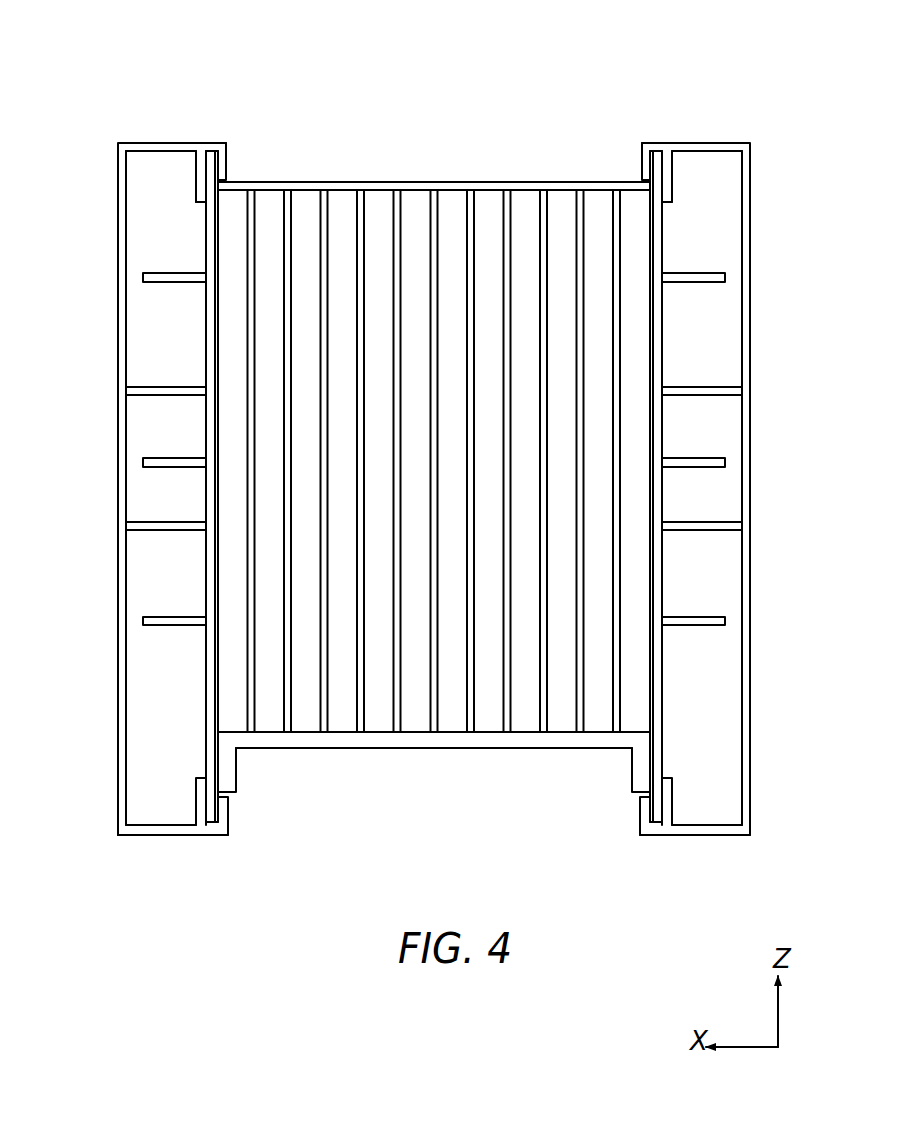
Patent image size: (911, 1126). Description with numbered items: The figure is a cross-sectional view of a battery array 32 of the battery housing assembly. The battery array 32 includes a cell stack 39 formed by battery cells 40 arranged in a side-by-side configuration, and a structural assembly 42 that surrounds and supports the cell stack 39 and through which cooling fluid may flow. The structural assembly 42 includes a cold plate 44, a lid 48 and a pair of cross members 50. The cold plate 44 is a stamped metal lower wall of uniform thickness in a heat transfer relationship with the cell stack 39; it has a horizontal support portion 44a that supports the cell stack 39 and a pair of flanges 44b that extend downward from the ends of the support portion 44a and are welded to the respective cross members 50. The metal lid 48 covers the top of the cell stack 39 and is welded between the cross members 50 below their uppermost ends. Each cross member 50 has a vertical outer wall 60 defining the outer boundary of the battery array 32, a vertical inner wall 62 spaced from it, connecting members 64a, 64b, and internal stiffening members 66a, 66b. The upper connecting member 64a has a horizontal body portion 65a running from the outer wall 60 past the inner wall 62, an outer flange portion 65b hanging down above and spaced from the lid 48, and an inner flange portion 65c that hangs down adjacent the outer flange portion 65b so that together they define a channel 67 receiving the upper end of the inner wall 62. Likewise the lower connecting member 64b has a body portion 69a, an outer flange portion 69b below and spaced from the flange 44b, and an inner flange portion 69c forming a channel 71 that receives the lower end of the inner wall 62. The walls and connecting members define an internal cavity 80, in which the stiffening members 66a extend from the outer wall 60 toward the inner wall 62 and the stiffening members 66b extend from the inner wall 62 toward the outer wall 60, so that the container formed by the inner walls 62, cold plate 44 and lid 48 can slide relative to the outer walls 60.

The battery array 32 is at (44, 259).
The cell stack 39 is at (340, 212).
The battery cells 40 is at (528, 205).
The structural assembly 42 is at (80, 370).
The cold plate 44 is at (434, 798).
The support portion 44a is at (400, 749).
The flange 44b is at (237, 768).
The lid 48 is at (418, 150).
The cross member 50 is at (100, 720).
The outer wall 60 is at (118, 445).
The inner wall 62 is at (205, 664).
The connecting member 64a is at (143, 141).
The connecting member 64b is at (175, 845).
The body portion 65a is at (178, 151).
The outer flange portion 65b is at (228, 172).
The inner flange portion 65c is at (197, 182).
The internal stiffening members 66a is at (167, 394).
The internal stiffening members 66b is at (165, 282).
The channel 67 is at (221, 156).
The body portion 69a is at (138, 833).
The outer flange portion 69b is at (226, 810).
The inner flange portion 69c is at (201, 797).
The channel 71 is at (214, 829).
The internal cavity 80 is at (158, 232).